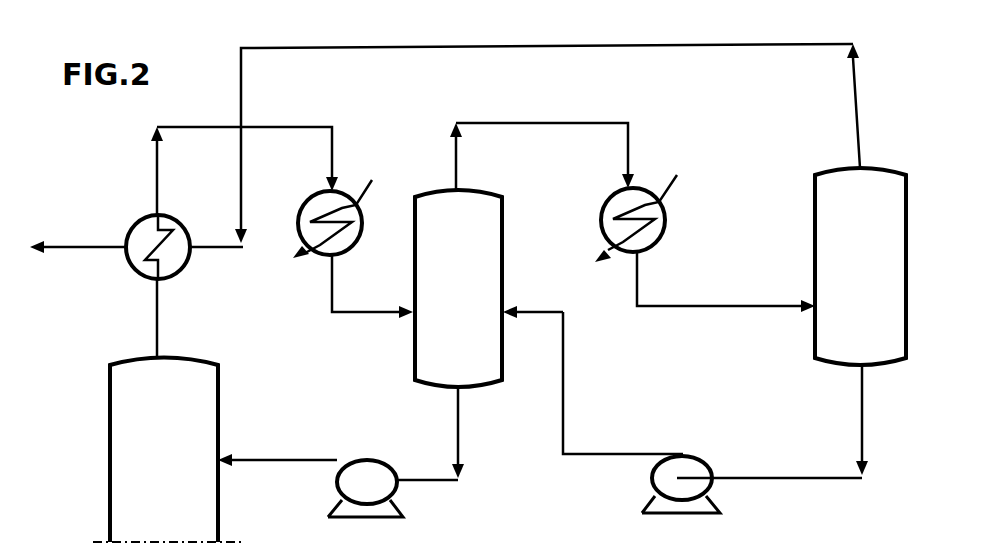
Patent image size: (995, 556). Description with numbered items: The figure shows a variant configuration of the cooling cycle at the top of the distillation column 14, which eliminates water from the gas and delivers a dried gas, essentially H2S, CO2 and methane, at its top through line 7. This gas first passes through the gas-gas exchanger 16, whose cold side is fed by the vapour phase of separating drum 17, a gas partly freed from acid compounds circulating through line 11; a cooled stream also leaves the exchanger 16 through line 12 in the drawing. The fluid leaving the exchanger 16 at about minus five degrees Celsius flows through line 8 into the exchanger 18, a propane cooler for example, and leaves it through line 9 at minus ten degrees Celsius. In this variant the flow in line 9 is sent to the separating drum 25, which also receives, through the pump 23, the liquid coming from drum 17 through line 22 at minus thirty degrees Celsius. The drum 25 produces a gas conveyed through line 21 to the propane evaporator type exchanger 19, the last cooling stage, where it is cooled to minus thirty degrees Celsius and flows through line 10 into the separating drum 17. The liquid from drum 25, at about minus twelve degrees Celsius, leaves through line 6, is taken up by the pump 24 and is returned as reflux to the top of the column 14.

The line 6 is at (460, 443).
The line 7 is at (157, 313).
The line 8 is at (157, 162).
The line 9 is at (332, 312).
The line 10 is at (718, 305).
The line 11 is at (853, 117).
The outlet line from heat exchanger 16 12 is at (90, 247).
The column 14 is at (168, 450).
The gas-gas exchanger 16 is at (128, 265).
The separating drum 17 is at (860, 266).
The exchanger 18 is at (363, 213).
The exchanger 19 is at (668, 218).
The line 21 is at (497, 127).
The line 22 is at (827, 477).
The pump 23 is at (684, 472).
The pump 24 is at (363, 482).
The separating drum 25 is at (458, 288).